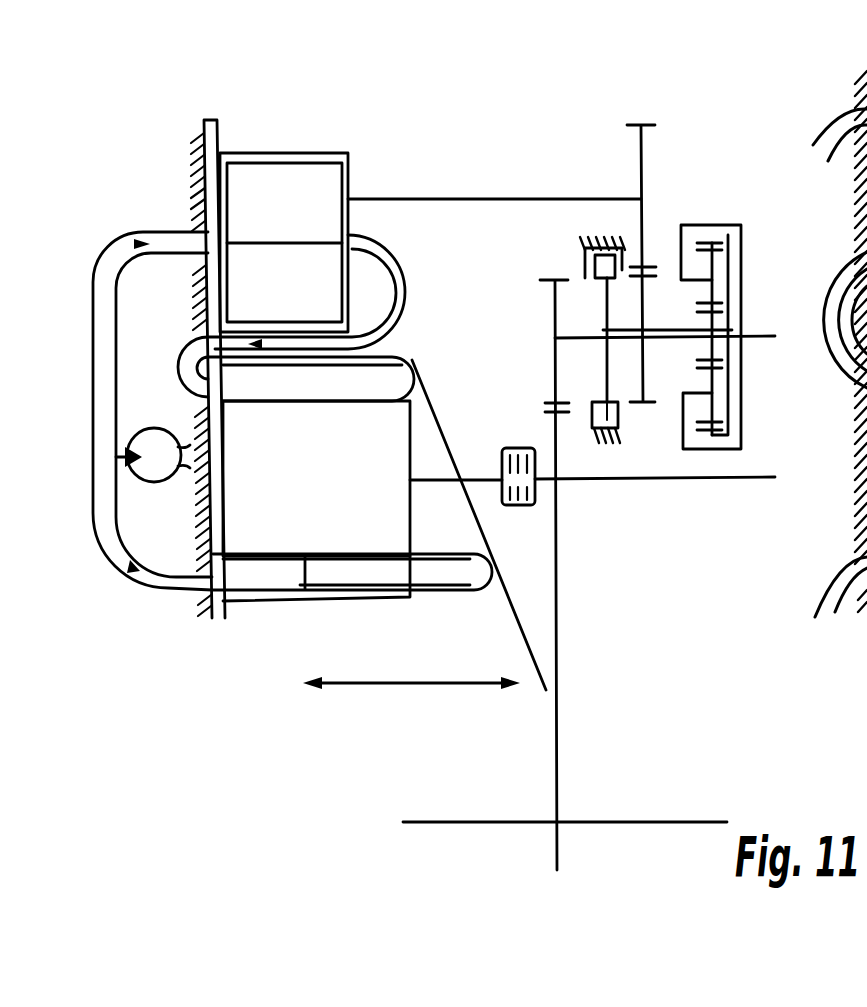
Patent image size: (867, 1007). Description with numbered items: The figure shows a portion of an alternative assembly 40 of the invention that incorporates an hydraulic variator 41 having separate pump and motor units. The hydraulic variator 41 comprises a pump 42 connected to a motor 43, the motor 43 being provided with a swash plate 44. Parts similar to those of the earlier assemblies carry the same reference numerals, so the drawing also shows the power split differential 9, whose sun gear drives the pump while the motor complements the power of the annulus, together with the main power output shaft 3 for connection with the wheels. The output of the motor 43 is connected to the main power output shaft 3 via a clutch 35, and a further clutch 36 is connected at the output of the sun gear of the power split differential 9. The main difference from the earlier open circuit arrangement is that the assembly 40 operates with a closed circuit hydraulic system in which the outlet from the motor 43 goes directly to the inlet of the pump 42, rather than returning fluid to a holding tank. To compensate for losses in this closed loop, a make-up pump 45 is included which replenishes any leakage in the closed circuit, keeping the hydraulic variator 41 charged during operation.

The main power output shaft 3 is at (643, 813).
The power split differential 9 is at (757, 237).
The clutch 35 is at (517, 447).
The clutch 36 is at (575, 278).
The assembly 40 is at (530, 80).
The hydraulic variator 41 is at (402, 176).
The pump 42 is at (307, 301).
The motor 43 is at (323, 499).
The swash plate 44 is at (515, 620).
The make-up pump 45 is at (161, 427).